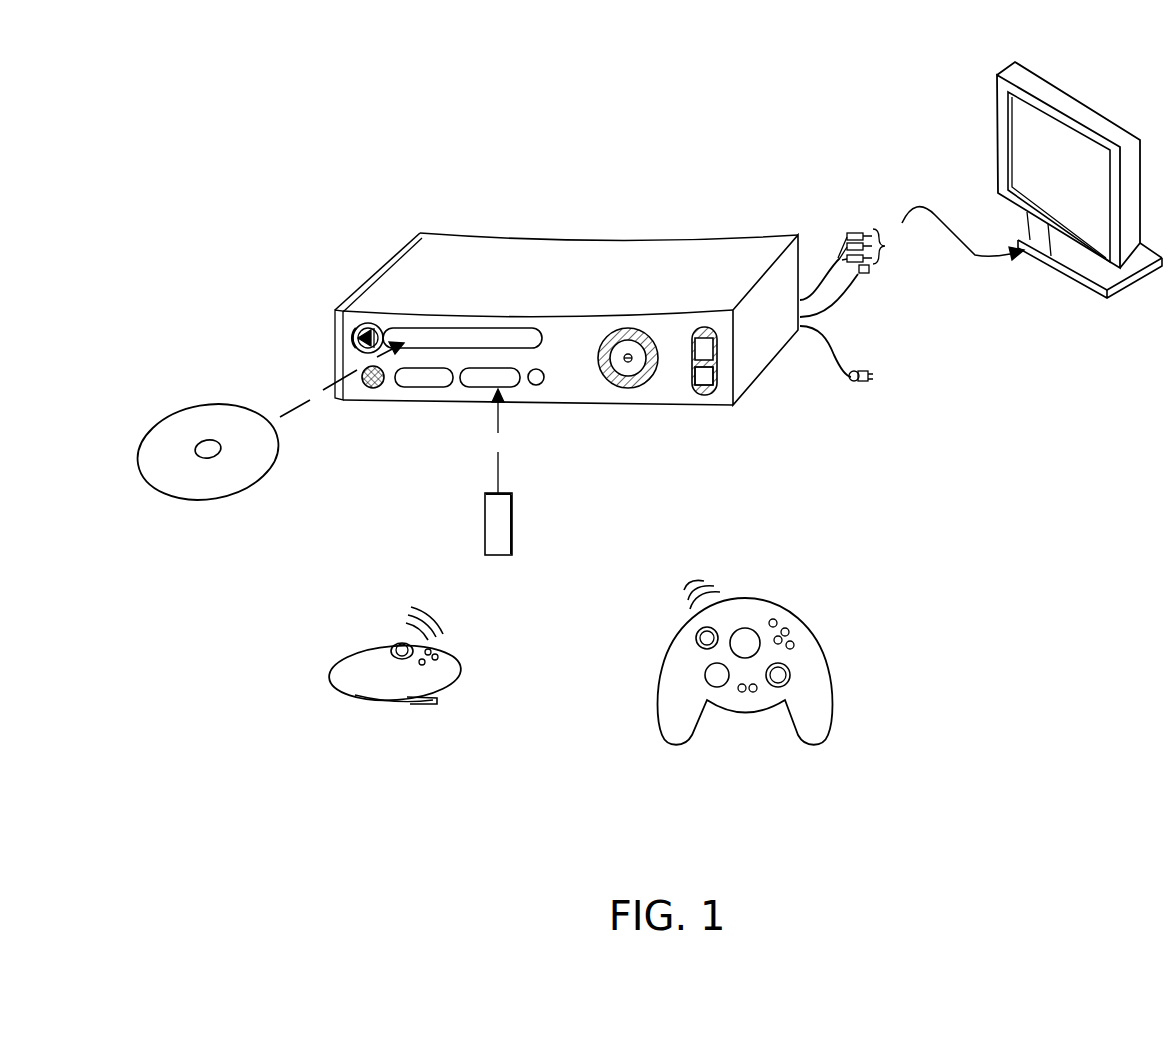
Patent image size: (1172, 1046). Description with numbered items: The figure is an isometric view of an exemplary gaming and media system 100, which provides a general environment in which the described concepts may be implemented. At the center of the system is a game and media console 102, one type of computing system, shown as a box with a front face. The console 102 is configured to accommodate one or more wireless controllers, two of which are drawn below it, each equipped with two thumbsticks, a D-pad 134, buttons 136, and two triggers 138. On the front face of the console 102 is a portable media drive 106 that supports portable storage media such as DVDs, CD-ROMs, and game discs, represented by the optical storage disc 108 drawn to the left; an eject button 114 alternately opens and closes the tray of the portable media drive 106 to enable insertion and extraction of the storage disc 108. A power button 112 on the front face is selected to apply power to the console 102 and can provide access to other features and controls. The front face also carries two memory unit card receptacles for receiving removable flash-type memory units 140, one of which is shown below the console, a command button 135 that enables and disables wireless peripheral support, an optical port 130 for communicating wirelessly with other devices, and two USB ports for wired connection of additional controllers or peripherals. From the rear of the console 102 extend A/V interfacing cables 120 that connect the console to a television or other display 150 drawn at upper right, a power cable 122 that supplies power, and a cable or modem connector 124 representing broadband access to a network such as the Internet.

The gaming and media system 100 is at (596, 201).
The game and media console 102 is at (450, 243).
The portable media drive 106 is at (468, 327).
The optical storage disc 108 is at (218, 498).
The power button 112 is at (631, 389).
The eject button 114 is at (353, 333).
The A/V interfacing cables 120 is at (853, 232).
The power cable 122 is at (853, 382).
The cable or modem connector 124 is at (865, 274).
The optical port 130 is at (374, 390).
The D-pad 134 is at (705, 675).
The command button 135 is at (536, 386).
The buttons 136 is at (790, 632).
The triggers 138 is at (432, 712).
The removable flash-type memory unit 140 is at (498, 557).
The television or other display 150 is at (996, 140).